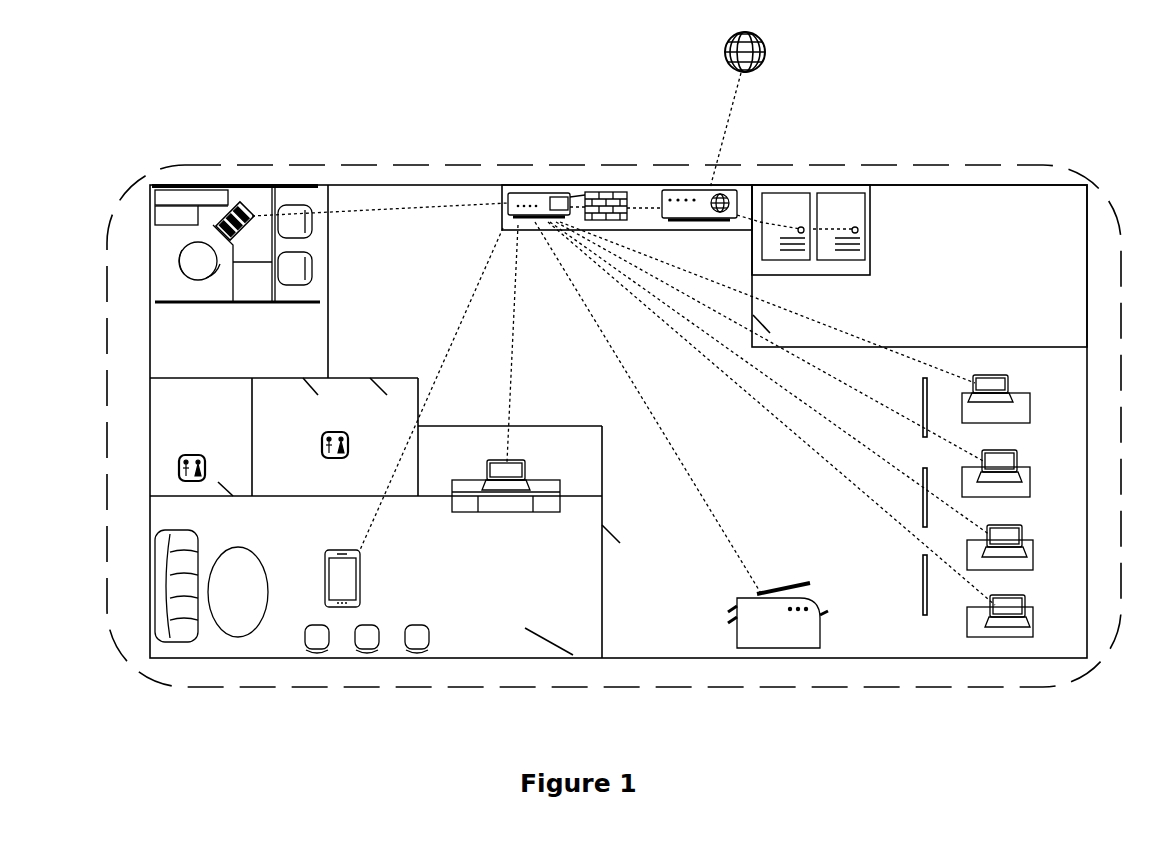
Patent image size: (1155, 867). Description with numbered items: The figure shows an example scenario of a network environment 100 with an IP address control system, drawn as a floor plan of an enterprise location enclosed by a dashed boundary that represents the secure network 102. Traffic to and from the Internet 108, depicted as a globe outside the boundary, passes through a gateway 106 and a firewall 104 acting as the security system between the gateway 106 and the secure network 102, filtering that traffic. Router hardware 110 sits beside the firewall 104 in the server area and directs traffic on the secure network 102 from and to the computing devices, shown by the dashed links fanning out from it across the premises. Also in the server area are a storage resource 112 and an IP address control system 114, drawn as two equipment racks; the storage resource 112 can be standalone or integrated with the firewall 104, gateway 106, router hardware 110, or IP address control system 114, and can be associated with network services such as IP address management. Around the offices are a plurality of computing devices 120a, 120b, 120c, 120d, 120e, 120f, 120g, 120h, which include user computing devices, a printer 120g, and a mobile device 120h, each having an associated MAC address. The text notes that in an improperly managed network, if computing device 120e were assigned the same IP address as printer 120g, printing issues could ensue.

The network environment 100 is at (110, 116).
The secure network 102 is at (112, 216).
The firewall 104 is at (607, 192).
The gateway 106 is at (690, 192).
The Internet 108 is at (767, 58).
The router hardware 110 is at (530, 193).
The storage resource 112 is at (798, 192).
The IP address control system 114 is at (853, 192).
The computing device 120a is at (242, 208).
The computing device 120b is at (1001, 381).
The computing device 120c is at (1014, 456).
The computing device 120d is at (1016, 528).
The computing device 120e is at (1020, 599).
The computing device 120f is at (521, 462).
The printer 120g is at (808, 605).
The computing device 120h is at (385, 578).